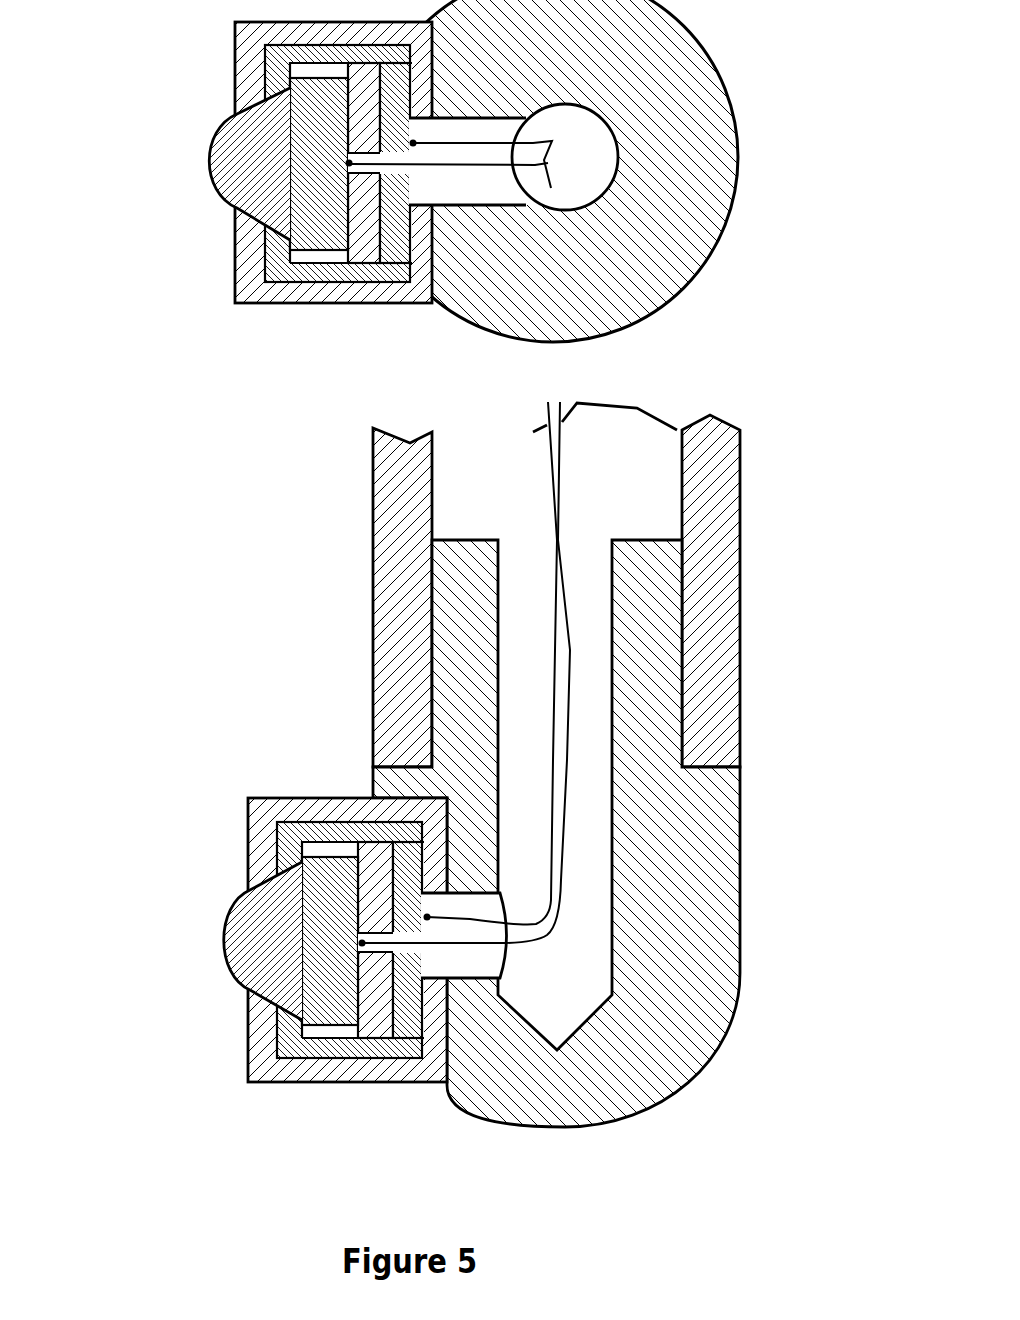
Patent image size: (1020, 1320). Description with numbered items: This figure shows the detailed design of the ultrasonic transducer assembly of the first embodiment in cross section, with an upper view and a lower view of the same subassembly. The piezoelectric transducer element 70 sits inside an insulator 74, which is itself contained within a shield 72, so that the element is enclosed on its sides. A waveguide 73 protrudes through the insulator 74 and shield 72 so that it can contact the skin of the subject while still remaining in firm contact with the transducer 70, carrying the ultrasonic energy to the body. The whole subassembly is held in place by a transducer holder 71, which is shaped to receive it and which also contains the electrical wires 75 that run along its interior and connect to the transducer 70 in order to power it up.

The piezoelectric transducer element 70 is at (315, 200).
The transducer holder 71 is at (613, 285).
The shield 72 is at (300, 290).
The waveguide 73 is at (253, 143).
The insulator 74 is at (278, 62).
The electrical wires 75 is at (560, 490).